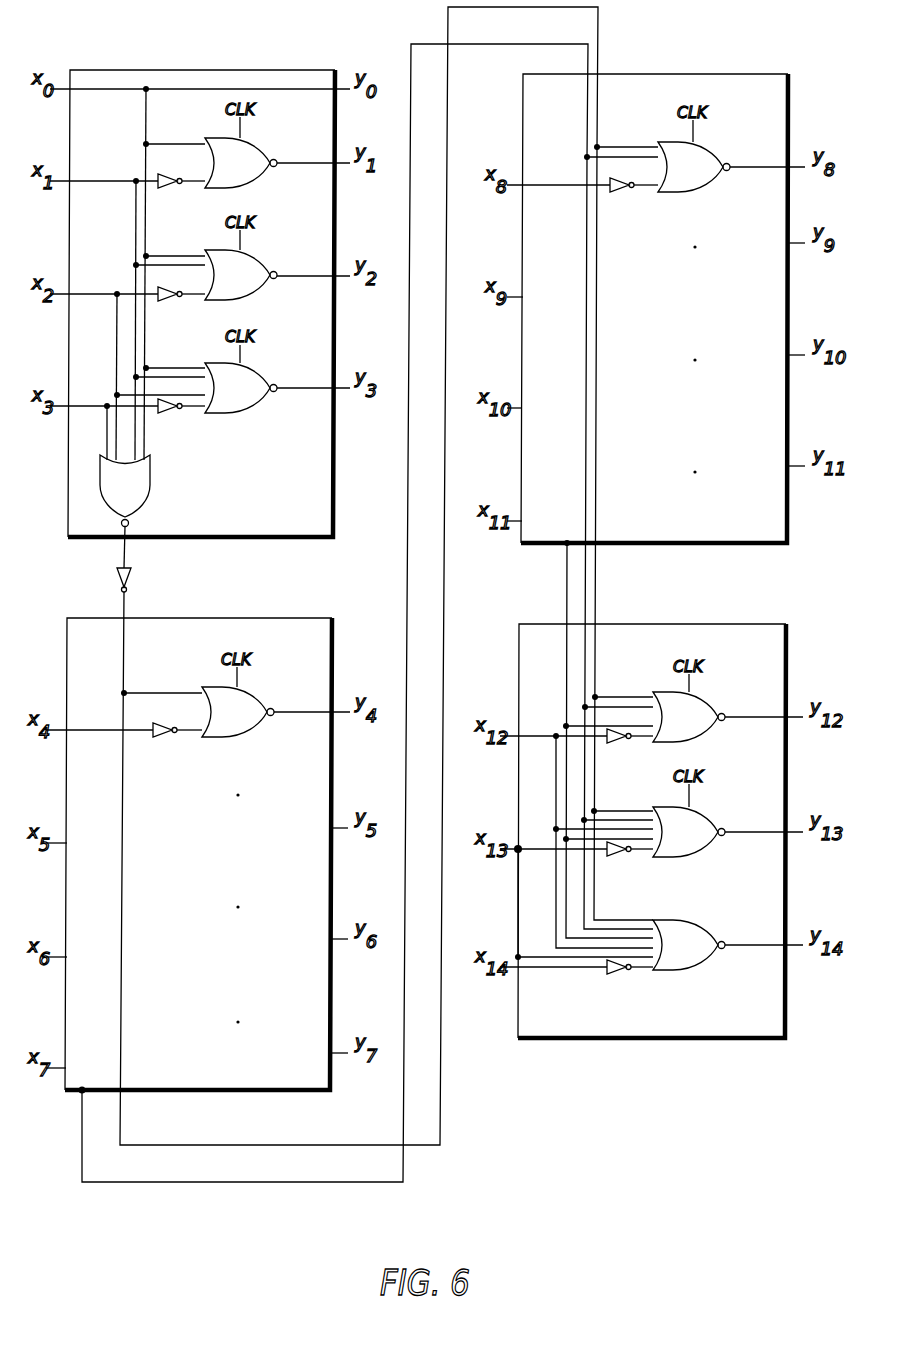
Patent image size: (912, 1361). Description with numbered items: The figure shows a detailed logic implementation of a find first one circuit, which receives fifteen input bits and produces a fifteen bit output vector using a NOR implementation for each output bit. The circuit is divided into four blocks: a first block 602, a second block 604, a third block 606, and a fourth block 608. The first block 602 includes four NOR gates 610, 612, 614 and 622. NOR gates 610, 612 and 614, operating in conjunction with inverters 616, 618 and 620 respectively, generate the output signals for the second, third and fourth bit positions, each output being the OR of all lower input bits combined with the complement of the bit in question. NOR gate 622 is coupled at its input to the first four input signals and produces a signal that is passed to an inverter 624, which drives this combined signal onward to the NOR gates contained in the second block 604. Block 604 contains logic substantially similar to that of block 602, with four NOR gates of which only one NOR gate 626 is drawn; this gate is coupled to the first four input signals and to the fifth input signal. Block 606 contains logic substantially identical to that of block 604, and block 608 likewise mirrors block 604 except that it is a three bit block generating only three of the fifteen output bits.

The first block 602 is at (273, 540).
The second block 604 is at (268, 1092).
The block 606 is at (770, 546).
The block 608 is at (745, 1040).
The NOR gate 610 is at (258, 138).
The NOR gate 612 is at (258, 250).
The NOR gate 614 is at (258, 363).
The inverter 616 is at (165, 188).
The inverter 618 is at (170, 301).
The inverter 620 is at (170, 413).
The NOR gate 622 is at (150, 490).
The inverter 624 is at (130, 577).
The NOR gate 626 is at (258, 688).